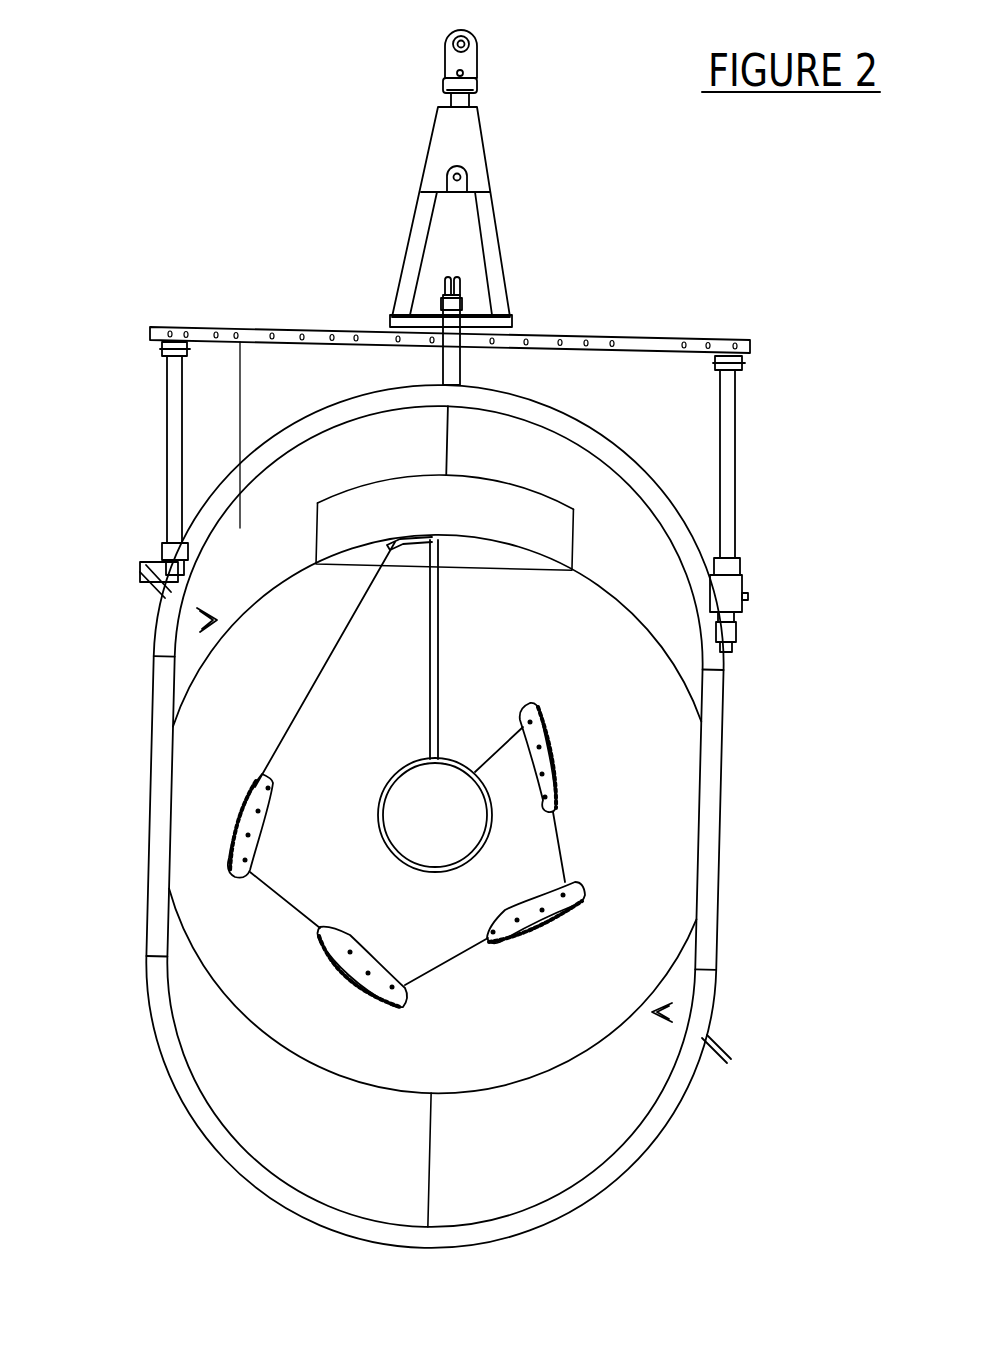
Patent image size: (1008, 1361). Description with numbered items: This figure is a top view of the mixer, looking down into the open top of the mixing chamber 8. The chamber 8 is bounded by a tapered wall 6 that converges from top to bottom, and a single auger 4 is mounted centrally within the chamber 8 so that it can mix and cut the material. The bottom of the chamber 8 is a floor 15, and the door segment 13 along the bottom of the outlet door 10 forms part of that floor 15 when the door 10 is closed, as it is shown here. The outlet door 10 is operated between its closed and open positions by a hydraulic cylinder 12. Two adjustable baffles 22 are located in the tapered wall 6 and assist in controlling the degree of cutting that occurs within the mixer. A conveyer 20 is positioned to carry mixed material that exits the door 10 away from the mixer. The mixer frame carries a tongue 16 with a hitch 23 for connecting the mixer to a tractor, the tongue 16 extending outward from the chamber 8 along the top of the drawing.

The auger 4 is at (300, 881).
The tapered wall 6 is at (485, 1180).
The mixing chamber 8 is at (620, 745).
The outlet door 10 is at (525, 520).
The hydraulic cylinder 12 is at (460, 318).
The segment 13 is at (355, 557).
The floor 15 is at (205, 777).
The tongue 16 is at (445, 150).
The conveyer 20 is at (203, 410).
The adjustable baffle 22 is at (150, 577).
The lifting eye 23 is at (476, 55).